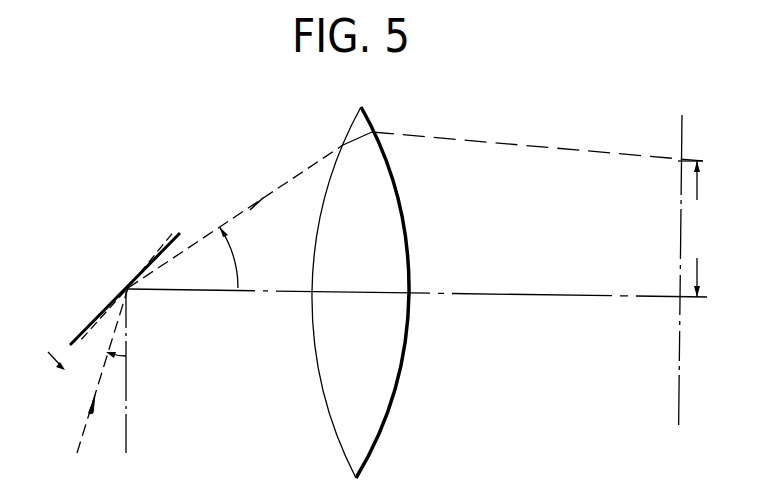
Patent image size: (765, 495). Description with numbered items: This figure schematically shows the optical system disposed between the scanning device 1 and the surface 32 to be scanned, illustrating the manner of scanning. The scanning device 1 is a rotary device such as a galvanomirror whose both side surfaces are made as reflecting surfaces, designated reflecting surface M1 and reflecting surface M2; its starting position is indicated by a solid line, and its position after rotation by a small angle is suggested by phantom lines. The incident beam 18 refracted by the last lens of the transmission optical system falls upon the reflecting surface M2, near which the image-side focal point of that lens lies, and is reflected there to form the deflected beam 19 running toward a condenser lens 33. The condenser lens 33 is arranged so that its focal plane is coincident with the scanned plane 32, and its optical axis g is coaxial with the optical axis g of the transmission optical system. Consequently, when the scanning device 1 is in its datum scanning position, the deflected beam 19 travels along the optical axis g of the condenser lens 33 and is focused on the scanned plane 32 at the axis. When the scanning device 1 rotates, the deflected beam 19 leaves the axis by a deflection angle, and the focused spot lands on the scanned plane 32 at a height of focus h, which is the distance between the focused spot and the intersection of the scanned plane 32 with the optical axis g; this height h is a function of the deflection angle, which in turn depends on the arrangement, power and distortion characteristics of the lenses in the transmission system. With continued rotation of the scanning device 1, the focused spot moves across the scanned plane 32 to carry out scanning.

The scanning device 1 is at (181, 232).
The reflecting surface M1 is at (168, 237).
The reflecting surface M2 is at (80, 348).
The beam I8 18 is at (80, 440).
The beam I9 19 is at (277, 188).
The condenser lens 33 is at (377, 440).
The surface to be scanned 32 is at (678, 457).
The optical axis g is at (126, 410).
The height of focus h is at (690, 229).